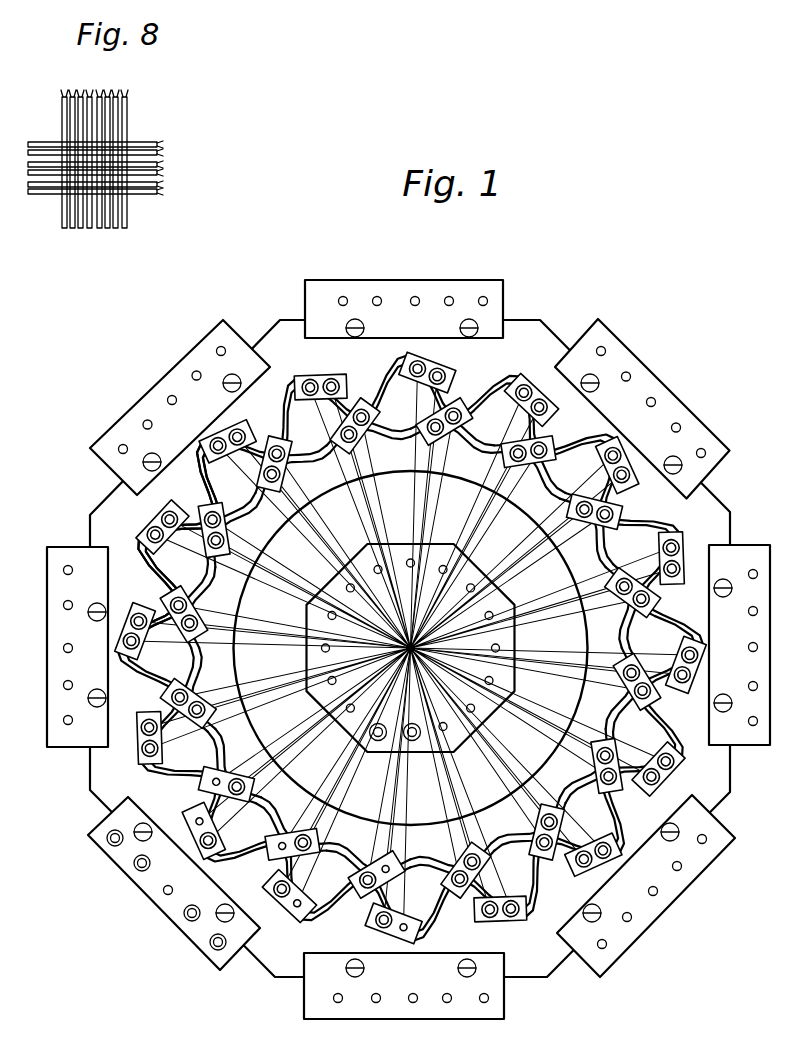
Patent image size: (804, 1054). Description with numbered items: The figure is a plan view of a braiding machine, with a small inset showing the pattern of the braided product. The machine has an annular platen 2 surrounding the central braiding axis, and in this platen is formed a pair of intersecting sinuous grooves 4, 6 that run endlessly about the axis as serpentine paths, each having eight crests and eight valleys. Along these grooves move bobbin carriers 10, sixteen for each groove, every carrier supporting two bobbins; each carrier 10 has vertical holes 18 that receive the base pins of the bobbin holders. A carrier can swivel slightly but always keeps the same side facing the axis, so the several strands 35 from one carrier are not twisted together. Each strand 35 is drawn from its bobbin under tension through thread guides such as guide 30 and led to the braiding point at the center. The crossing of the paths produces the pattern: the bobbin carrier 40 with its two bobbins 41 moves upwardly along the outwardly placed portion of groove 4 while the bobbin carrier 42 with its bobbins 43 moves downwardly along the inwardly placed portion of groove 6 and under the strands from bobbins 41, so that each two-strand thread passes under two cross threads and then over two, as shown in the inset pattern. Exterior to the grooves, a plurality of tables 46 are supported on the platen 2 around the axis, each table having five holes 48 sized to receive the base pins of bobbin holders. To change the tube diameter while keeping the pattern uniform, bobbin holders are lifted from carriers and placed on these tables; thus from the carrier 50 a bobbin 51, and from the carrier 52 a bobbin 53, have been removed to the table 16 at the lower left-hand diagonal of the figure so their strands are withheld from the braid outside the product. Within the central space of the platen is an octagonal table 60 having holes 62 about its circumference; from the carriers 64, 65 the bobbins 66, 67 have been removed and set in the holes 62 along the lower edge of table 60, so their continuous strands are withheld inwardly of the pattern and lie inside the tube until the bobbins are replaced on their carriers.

In FIG. 1, the platen 2 is at (260, 950).
In FIG. 1, the sinuous groove 4 is at (153, 578).
In FIG. 1, the sinuous groove 6 is at (207, 587).
In FIG. 1, the bobbin carrier 10 is at (440, 363).
In FIG. 1, the corner plate with rings 16 is at (167, 883).
In FIG. 1, the holes 18 is at (205, 780).
In FIG. 1, the thread guide 30 is at (438, 648).
In FIG. 8, the strand 35 is at (95, 88).
In FIG. 1, the strand 35 is at (415, 465).
In FIG. 1, the bobbin carrier 40 is at (149, 528).
In FIG. 1, the bobbins 41 is at (160, 513).
In FIG. 1, the bobbin carrier 42 is at (230, 527).
In FIG. 1, the bobbins 43 is at (213, 507).
In FIG. 1, the tables 46 is at (408, 665).
In FIG. 1, the holes 48 is at (680, 428).
In FIG. 1, the bobbin carrier 50 is at (228, 767).
In FIG. 1, the bobbin 51 is at (108, 844).
In FIG. 1, the bobbin carrier 52 is at (220, 815).
In FIG. 1, the bobbin 53 is at (137, 870).
In FIG. 1, the table 60 is at (509, 639).
In FIG. 1, the holes 62 is at (407, 558).
In FIG. 1, the bobbin carrier 64 is at (325, 810).
In FIG. 1, the bobbin carrier 65 is at (297, 880).
In FIG. 1, the bobbin 66 is at (378, 742).
In FIG. 1, the bobbin 67 is at (384, 723).